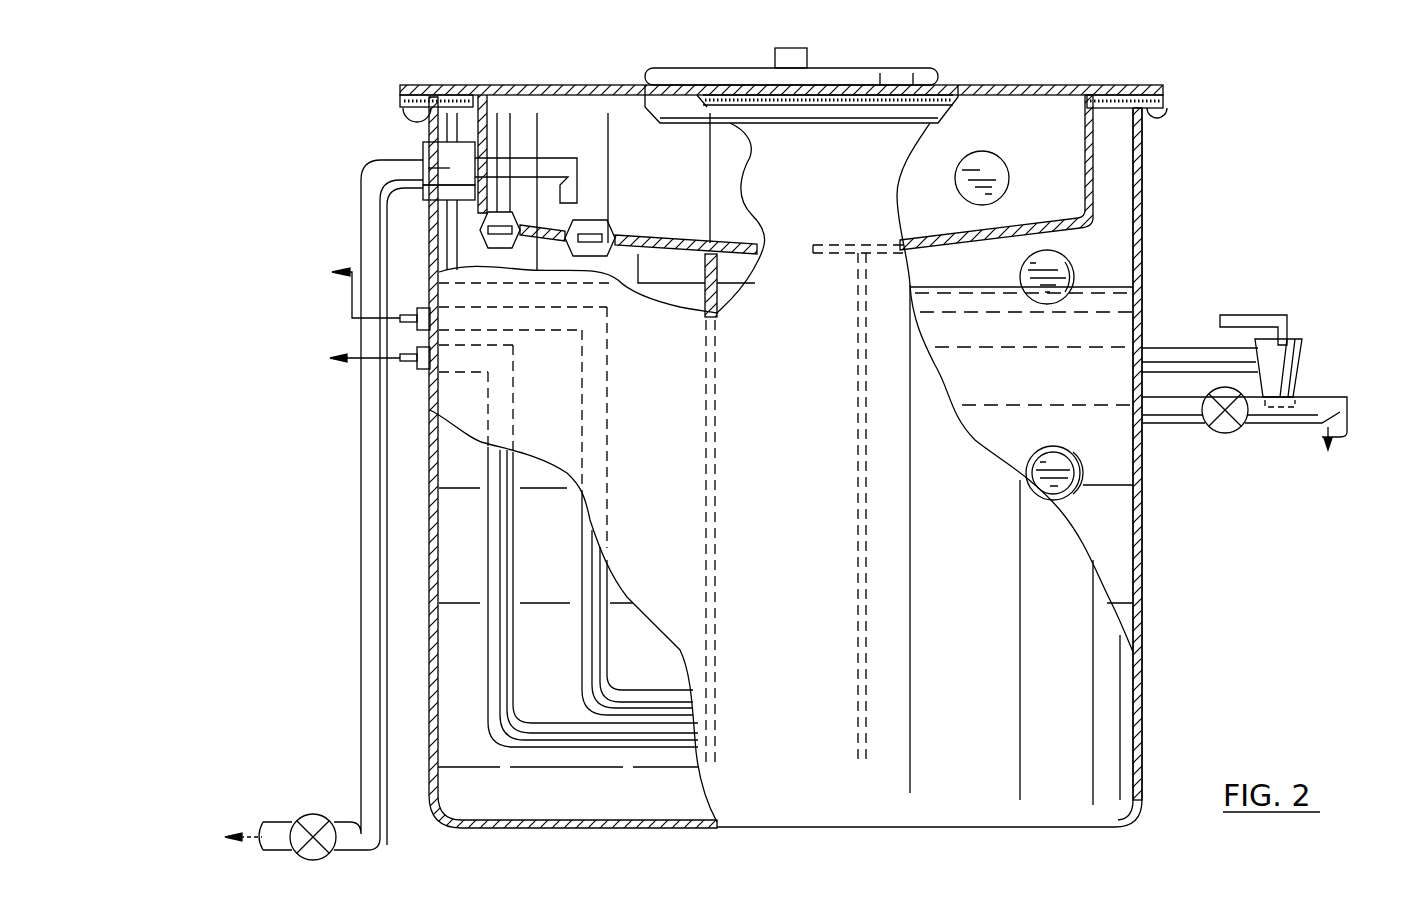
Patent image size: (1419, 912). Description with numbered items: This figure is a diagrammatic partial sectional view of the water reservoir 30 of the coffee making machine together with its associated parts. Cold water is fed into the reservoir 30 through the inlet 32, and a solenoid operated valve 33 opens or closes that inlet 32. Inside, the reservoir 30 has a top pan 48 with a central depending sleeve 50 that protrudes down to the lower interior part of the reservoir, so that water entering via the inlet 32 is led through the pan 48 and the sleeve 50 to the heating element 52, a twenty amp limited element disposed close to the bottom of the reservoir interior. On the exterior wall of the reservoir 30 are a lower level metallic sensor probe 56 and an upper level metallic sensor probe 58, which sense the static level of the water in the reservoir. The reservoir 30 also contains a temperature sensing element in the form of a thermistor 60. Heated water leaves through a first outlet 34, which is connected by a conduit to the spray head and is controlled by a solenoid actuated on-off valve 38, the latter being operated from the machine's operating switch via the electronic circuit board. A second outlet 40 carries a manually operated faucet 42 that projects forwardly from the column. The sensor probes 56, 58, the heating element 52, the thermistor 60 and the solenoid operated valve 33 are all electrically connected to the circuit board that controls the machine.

The water reservoir 30 is at (1167, 281).
The inlet 32 is at (580, 187).
The solenoid operated valve 33 is at (318, 813).
The first outlet 34 is at (1147, 413).
The solenoid actuated on-off valve 38 is at (1233, 425).
The second outlet 40 is at (1144, 362).
The manually operated faucet 42 is at (1303, 362).
The top pan 48 is at (674, 243).
The central depending sleeve 50 is at (718, 440).
The heating element 52 is at (668, 778).
The lower level metallic sensor probe 56 is at (1068, 260).
The upper level metallic sensor probe 58 is at (1009, 175).
The thermistor 60 is at (1062, 505).